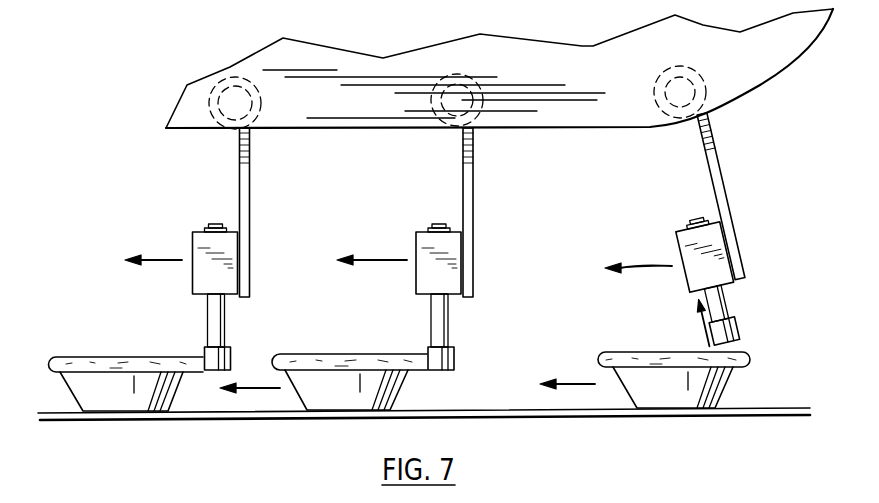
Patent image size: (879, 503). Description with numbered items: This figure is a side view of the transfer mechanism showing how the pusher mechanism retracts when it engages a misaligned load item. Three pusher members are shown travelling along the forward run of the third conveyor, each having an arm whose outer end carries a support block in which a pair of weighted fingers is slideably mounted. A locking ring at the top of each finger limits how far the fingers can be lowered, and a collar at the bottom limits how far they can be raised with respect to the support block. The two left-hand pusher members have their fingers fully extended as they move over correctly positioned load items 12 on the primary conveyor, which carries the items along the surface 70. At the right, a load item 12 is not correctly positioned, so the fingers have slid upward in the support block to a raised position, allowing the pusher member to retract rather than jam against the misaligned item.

The load item 12 is at (670, 400).
The conveyor surface 70 is at (520, 414).